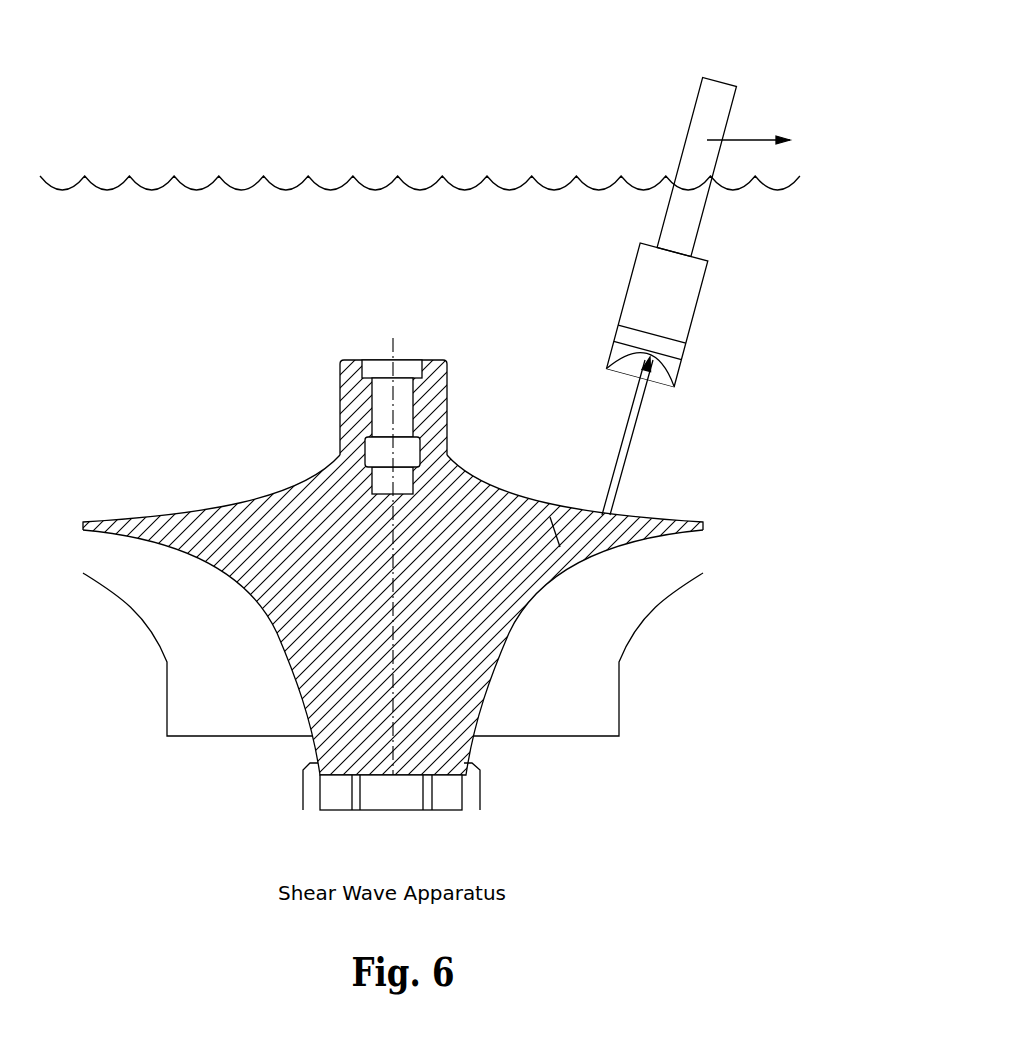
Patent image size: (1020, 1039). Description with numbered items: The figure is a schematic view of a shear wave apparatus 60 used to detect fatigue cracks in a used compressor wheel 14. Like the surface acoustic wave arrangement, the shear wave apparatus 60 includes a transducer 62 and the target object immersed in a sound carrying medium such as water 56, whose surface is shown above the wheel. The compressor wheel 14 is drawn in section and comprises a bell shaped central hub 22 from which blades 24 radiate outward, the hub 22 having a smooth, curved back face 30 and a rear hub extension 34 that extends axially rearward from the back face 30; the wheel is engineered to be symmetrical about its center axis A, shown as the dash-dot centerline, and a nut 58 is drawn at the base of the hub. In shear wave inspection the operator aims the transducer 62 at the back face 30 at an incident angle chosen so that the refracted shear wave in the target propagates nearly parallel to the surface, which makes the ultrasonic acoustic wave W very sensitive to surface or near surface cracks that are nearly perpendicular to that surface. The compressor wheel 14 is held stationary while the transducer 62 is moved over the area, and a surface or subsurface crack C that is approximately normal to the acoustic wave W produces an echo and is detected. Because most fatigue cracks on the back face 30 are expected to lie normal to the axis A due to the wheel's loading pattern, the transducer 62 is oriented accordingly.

The shear wave apparatus 60 is at (228, 137).
The water 56 is at (227, 273).
The compressor wheel 14 is at (540, 600).
The rear hub extension 34 is at (447, 395).
The back face 30 is at (153, 517).
The central hub 22 is at (500, 668).
The center axis A is at (393, 345).
The blades 24 is at (150, 622).
The nut 58 is at (480, 777).
The transducer 62 is at (697, 312).
The ultrasonic acoustic wave W is at (630, 443).
The crack C is at (553, 535).